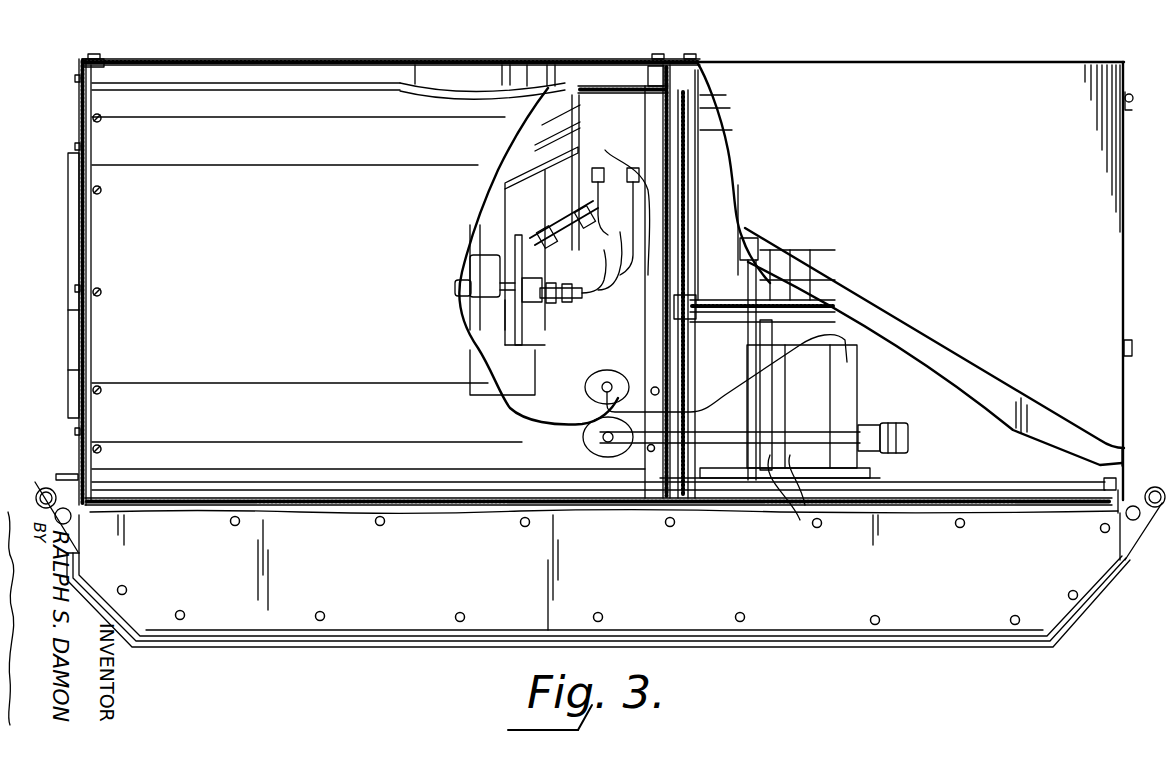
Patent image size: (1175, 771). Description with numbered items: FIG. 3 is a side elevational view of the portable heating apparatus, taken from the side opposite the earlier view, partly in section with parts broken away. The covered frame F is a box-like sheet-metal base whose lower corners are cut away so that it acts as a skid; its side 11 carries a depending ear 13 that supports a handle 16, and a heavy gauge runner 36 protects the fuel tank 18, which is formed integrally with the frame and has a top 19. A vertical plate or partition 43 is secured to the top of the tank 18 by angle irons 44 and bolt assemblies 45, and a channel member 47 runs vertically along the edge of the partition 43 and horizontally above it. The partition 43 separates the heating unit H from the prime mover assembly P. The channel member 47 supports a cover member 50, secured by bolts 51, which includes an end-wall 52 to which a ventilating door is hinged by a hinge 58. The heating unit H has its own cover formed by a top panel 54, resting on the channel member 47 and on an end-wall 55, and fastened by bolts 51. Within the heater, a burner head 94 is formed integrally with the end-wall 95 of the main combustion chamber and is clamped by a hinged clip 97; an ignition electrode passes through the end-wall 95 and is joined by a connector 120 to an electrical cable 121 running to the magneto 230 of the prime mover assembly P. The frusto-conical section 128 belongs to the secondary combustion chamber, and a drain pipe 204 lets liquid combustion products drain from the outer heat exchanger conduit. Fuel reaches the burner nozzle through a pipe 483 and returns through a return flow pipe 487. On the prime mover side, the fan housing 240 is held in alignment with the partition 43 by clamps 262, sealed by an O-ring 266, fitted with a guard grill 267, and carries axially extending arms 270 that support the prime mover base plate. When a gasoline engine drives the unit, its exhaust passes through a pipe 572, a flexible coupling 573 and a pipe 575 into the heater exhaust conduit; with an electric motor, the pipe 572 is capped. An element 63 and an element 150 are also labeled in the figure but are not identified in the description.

The side of the frame 11 is at (350, 565).
The depending ear 13 is at (58, 480).
The handle 16 is at (1160, 510).
The fuel reservoir or tank 18 is at (752, 585).
The top of the tank 19 is at (447, 512).
The runner 36 is at (115, 640).
The vertical plate or partition 43 is at (658, 150).
The angle iron 44 is at (675, 510).
The bolt assembly 45 is at (648, 508).
The channel member 47 is at (660, 63).
The cover member 50 is at (893, 80).
The bolt 51 is at (96, 55).
The end-wall of cover member 52 is at (1124, 265).
The top panel 54 is at (152, 62).
The end-wall of heater cover 55 is at (78, 122).
The hinge 58 is at (1133, 98).
The side bracket 63 is at (68, 252).
The burner head 94 is at (520, 330).
The end-wall of main combustion chamber 95 is at (480, 330).
The clip 97 is at (470, 300).
The connector 120 is at (540, 222).
The electrical cable 121 is at (595, 338).
The frusto-conical section 128 is at (545, 168).
The drum 150 is at (445, 78).
The drain pipe 204 is at (60, 465).
The magneto 230 is at (808, 415).
The fan housing 240 is at (720, 162).
The clamp 262 is at (690, 318).
The O-ring 266 is at (690, 195).
The grill or guard 267 is at (765, 238).
The axially extending arm 270 is at (800, 300).
The pipe 483 is at (605, 305).
The return flow pipe 487 is at (607, 280).
The pipe 572 is at (878, 425).
The flexible coupling 573 is at (720, 505).
The pipe 575 is at (590, 448).
The covered frame F is at (795, 592).
The heating unit H is at (208, 100).
The prime mover assembly P is at (870, 305).